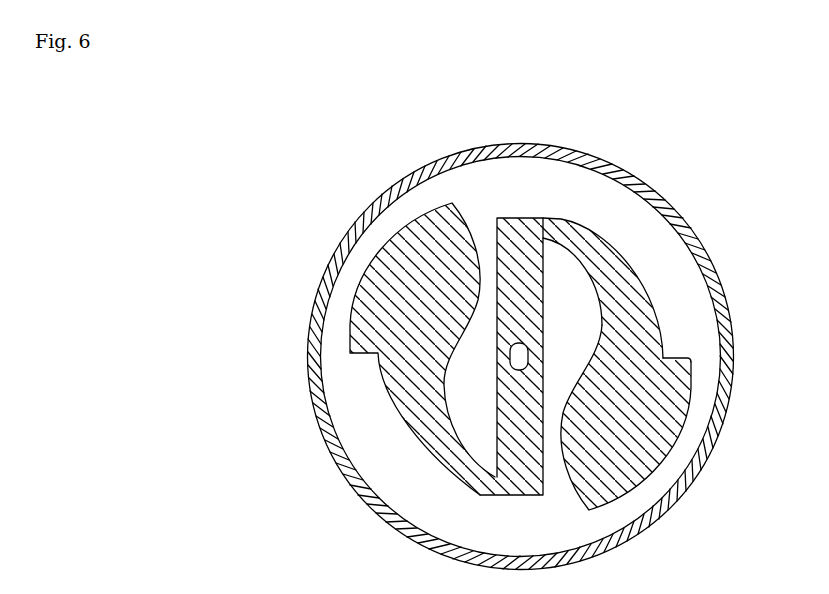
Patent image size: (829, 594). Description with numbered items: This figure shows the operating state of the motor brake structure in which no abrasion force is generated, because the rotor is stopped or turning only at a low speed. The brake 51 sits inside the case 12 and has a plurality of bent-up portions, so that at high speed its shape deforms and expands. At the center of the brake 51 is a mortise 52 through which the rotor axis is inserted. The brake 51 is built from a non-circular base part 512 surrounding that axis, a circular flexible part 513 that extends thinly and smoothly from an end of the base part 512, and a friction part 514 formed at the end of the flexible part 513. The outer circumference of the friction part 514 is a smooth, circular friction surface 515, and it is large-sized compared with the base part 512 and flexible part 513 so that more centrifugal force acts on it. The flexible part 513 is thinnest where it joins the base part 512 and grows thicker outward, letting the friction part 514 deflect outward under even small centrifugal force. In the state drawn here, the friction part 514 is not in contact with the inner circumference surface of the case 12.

The case 12 is at (317, 416).
The brake 51 is at (572, 193).
The base part 512 is at (518, 240).
The flexible part 513 is at (594, 241).
The friction part 514 is at (621, 476).
The friction surface 515 is at (672, 432).
The mortise 52 is at (528, 357).